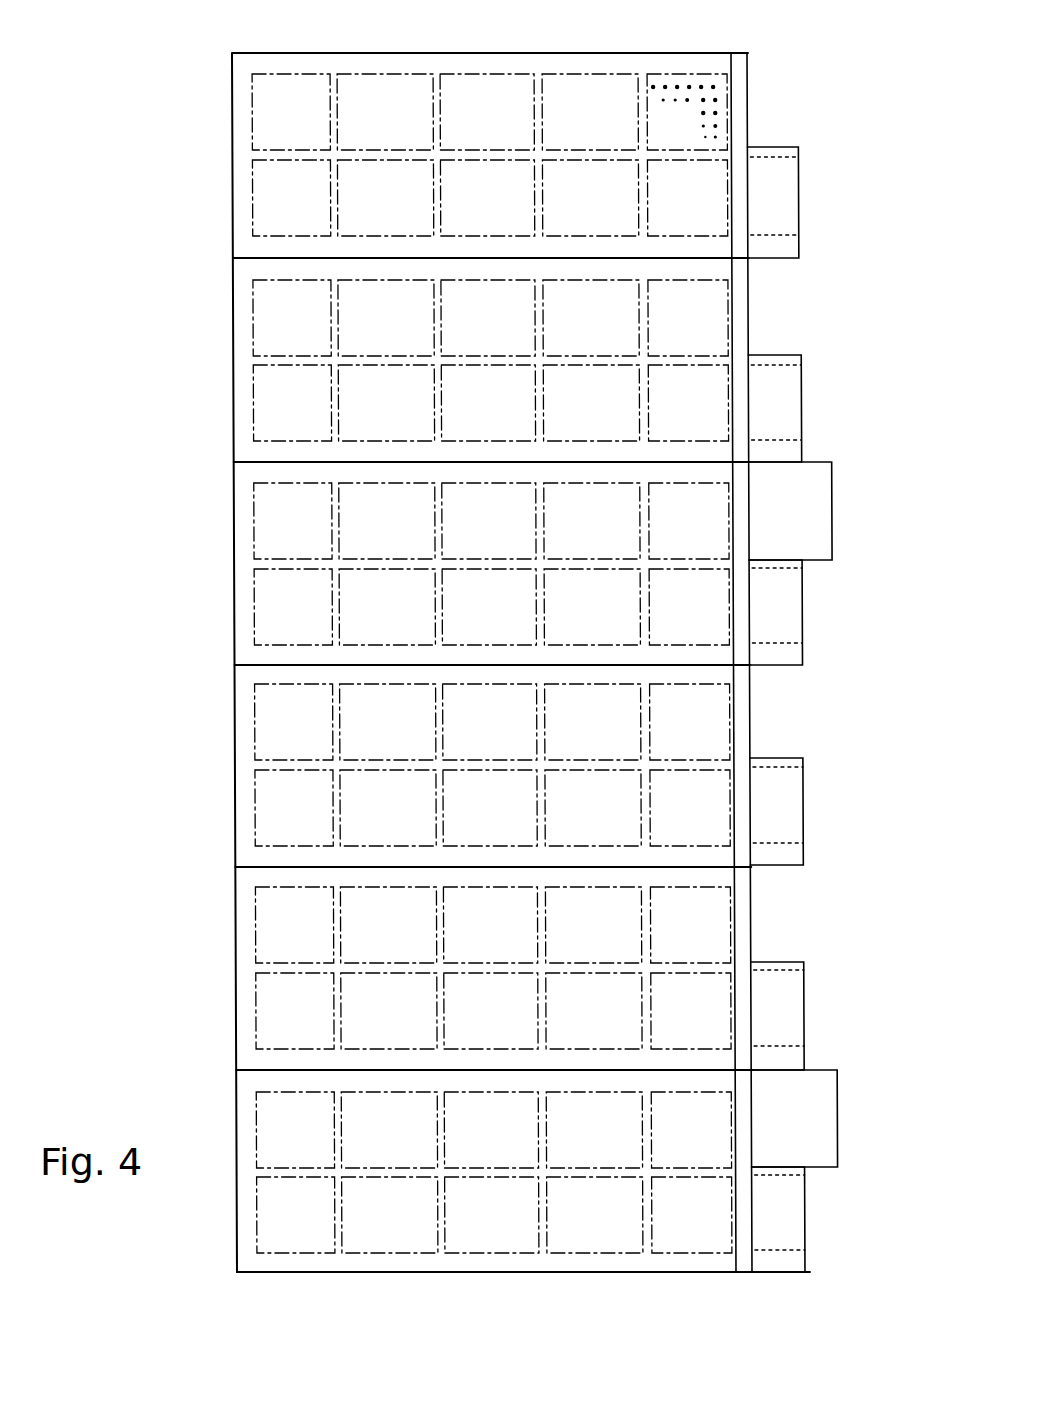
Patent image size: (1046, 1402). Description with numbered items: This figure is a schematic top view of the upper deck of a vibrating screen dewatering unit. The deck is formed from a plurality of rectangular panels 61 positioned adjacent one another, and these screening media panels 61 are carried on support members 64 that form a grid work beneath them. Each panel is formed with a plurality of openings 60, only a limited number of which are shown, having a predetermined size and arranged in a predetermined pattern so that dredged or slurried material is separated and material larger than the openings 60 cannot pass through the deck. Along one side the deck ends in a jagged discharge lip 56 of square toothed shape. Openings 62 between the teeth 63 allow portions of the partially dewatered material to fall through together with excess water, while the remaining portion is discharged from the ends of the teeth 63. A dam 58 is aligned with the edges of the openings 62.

The jagged discharge lip 56 is at (768, 40).
The dam 58 is at (743, 1272).
The openings 60 is at (693, 85).
The rectangular panels 61 is at (313, 131).
The openings between the teeth 62 is at (792, 310).
The teeth 63 is at (800, 196).
The support members 64 is at (283, 380).